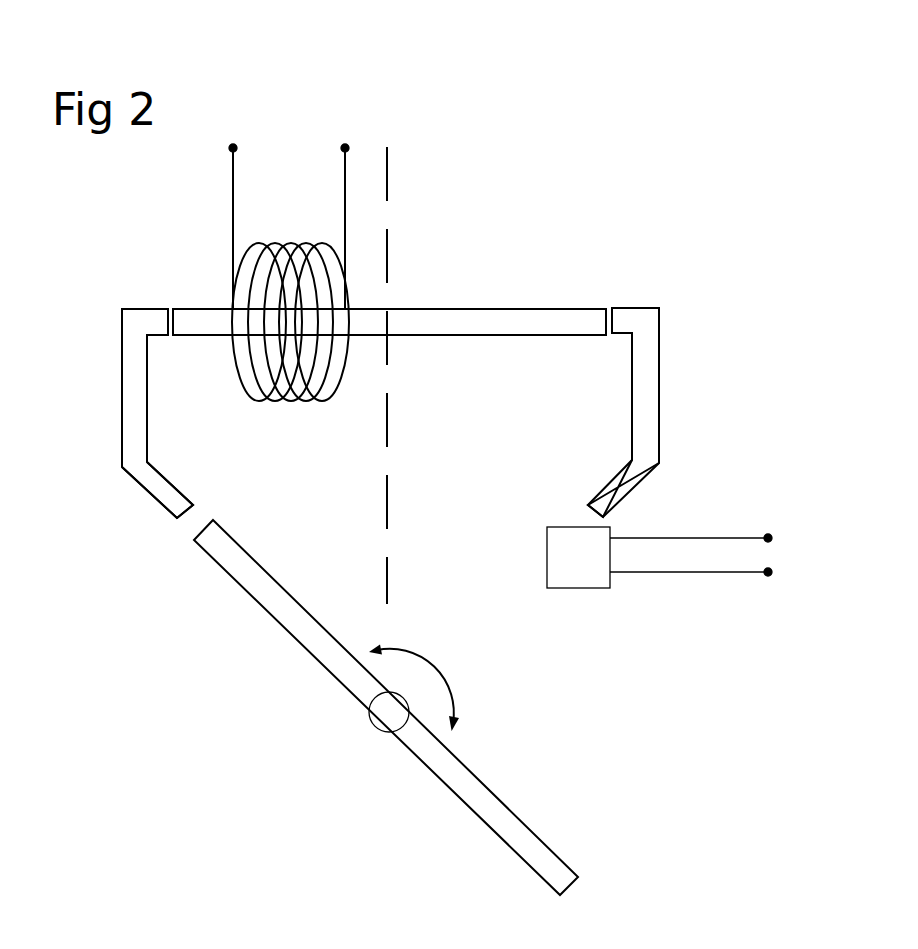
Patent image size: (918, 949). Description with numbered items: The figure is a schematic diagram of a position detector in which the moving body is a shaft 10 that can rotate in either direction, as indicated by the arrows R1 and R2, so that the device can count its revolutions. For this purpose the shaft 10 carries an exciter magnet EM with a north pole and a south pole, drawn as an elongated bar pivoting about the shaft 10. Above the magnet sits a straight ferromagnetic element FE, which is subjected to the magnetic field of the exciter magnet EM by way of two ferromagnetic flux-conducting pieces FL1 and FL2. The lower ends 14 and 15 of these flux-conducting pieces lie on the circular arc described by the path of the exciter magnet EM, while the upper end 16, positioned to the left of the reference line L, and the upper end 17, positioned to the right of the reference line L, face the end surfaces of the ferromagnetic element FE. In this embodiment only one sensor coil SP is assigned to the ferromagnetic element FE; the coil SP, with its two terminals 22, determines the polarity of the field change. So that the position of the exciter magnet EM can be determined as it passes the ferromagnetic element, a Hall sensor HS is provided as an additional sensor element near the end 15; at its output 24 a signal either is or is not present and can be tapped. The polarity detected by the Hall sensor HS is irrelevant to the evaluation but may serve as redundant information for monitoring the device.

The shaft 10 is at (383, 718).
The end of flux-conducting piece FL1 14 is at (177, 518).
The end of flux-conducting piece FL2 15 is at (597, 508).
The end of flux-conducting piece FL1 facing the ferromagnetic element 16 is at (167, 318).
The end of flux-conducting piece FL2 facing the ferromagnetic element 17 is at (613, 320).
The coil terminals 22 is at (289, 188).
The output of the Hall sensor 24 is at (729, 555).
The sensor coil SP is at (292, 250).
The ferromagnetic element FE is at (441, 321).
The first ferromagnetic flux-conducting piece FL1 is at (133, 393).
The second ferromagnetic flux-conducting piece FL2 is at (645, 387).
The reference line L is at (388, 178).
The Hall sensor HS is at (580, 558).
The exciter magnet EM is at (508, 827).
The rotation direction R1 is at (440, 694).
The rotation direction R2 is at (399, 629).